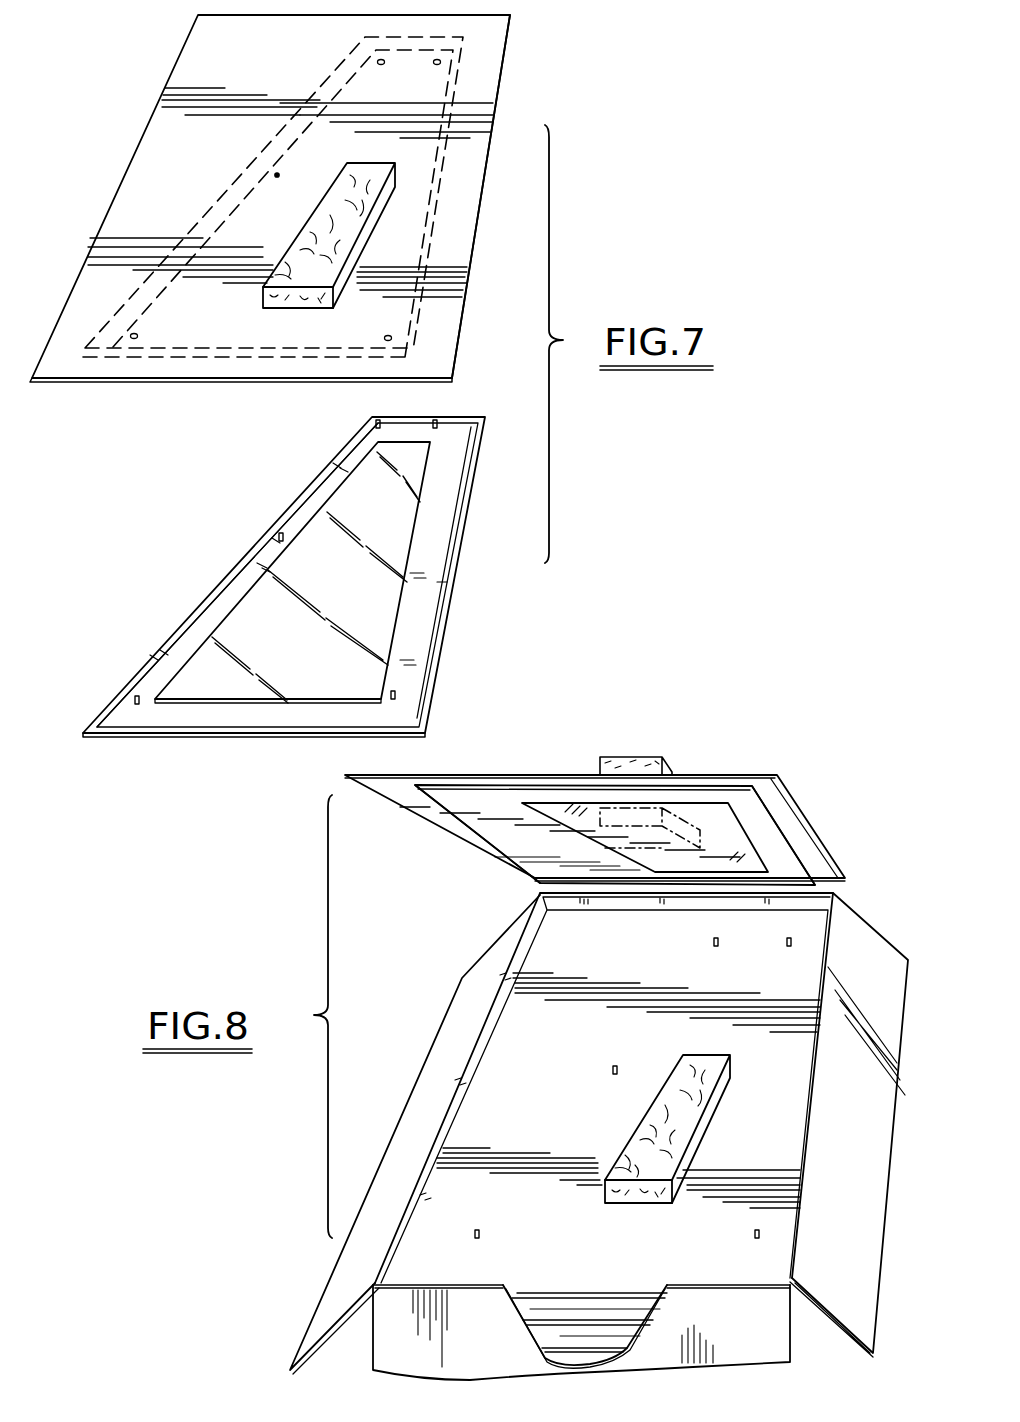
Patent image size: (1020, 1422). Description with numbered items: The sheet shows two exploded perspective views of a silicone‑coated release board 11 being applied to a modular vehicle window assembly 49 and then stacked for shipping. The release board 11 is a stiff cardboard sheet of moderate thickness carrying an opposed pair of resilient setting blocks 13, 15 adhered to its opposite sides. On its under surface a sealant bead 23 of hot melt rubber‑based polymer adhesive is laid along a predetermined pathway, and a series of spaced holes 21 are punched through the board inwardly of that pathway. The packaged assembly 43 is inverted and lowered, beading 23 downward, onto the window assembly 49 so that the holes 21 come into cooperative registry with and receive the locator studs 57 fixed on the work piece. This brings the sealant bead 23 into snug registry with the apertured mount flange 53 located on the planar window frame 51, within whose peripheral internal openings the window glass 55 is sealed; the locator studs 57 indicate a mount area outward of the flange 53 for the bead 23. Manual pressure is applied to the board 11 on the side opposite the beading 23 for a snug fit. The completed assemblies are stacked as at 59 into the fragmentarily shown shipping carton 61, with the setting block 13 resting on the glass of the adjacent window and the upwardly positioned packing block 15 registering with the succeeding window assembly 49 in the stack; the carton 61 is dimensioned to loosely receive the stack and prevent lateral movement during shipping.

In FIG. 7, the coated release board 11 is at (141, 157).
In FIG. 8, the coated release board 11 is at (727, 772).
In FIG. 8, the setting block 13 is at (700, 834).
In FIG. 7, the setting block 15 is at (328, 198).
In FIG. 8, the setting block 15 is at (630, 756).
In FIG. 7, the holes 21 is at (136, 345).
In FIG. 7, the sealant bead 23 is at (224, 189).
In FIG. 7, the packaged assembly 43 is at (500, 97).
In FIG. 7, the modular window assembly 49 is at (453, 597).
In FIG. 8, the modular window assembly 49 is at (482, 803).
In FIG. 7, the planar window frame 51 is at (441, 649).
In FIG. 7, the mount flange 53 is at (449, 561).
In FIG. 7, the window glass 55 is at (250, 590).
In FIG. 8, the window glass 55 is at (740, 845).
In FIG. 7, the locator studs 57 is at (441, 419).
In FIG. 8, the locator studs 57 is at (792, 939).
In FIG. 8, the stack 59 is at (510, 872).
In FIG. 8, the shipping carton 61 is at (373, 1343).